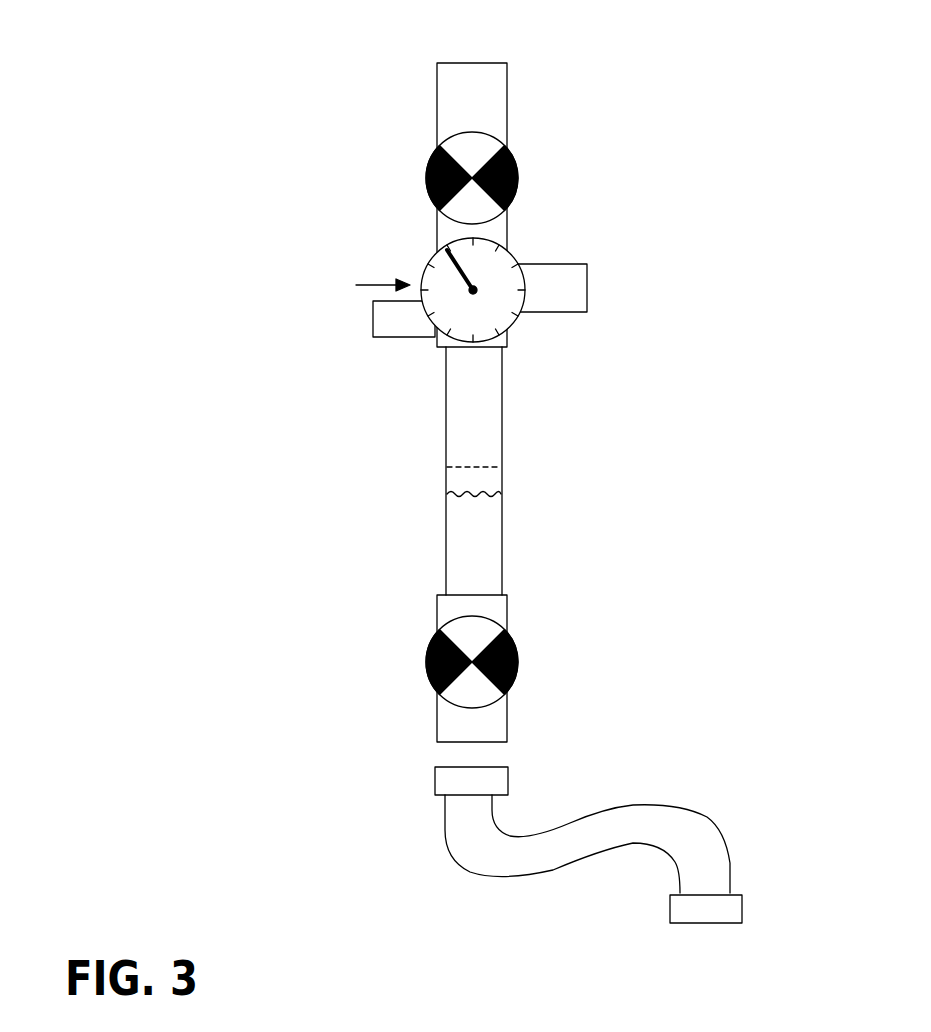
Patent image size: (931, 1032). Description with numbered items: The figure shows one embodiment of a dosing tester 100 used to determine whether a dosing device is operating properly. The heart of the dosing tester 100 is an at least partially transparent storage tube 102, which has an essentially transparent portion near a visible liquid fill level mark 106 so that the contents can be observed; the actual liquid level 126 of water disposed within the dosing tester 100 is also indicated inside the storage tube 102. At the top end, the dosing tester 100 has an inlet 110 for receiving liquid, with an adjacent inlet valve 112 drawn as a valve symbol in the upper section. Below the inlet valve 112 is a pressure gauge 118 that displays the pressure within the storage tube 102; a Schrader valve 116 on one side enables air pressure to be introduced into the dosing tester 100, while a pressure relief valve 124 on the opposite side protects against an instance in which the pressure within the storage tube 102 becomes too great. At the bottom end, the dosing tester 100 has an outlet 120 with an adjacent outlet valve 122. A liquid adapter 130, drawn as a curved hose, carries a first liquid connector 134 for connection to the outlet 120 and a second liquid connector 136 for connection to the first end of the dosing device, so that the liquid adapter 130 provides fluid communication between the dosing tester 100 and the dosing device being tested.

The dosing tester 100 is at (275, 101).
The storage tube 102 is at (506, 417).
The liquid fill level mark 106 is at (482, 465).
The inlet 110 is at (482, 63).
The inlet valve 112 is at (520, 175).
The Schrader valve 116 is at (573, 263).
The pressure gauge 118 is at (437, 250).
The outlet 120 is at (487, 742).
The outlet valve 122 is at (518, 662).
The pressure relief valve 124 is at (398, 323).
The actual liquid level 126 is at (486, 490).
The liquid adapter 130 is at (453, 857).
The first liquid connector 134 is at (435, 780).
The second liquid connector 136 is at (742, 906).